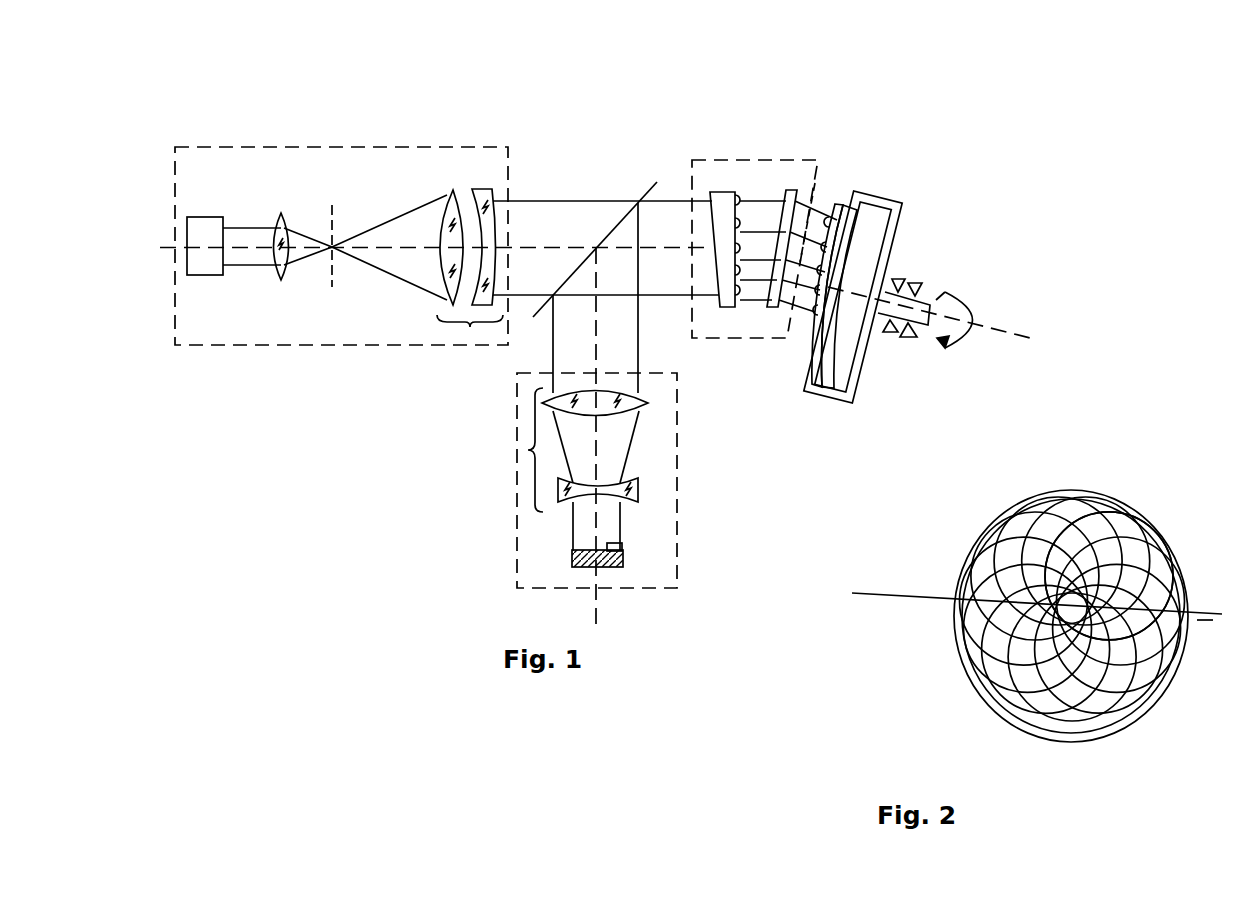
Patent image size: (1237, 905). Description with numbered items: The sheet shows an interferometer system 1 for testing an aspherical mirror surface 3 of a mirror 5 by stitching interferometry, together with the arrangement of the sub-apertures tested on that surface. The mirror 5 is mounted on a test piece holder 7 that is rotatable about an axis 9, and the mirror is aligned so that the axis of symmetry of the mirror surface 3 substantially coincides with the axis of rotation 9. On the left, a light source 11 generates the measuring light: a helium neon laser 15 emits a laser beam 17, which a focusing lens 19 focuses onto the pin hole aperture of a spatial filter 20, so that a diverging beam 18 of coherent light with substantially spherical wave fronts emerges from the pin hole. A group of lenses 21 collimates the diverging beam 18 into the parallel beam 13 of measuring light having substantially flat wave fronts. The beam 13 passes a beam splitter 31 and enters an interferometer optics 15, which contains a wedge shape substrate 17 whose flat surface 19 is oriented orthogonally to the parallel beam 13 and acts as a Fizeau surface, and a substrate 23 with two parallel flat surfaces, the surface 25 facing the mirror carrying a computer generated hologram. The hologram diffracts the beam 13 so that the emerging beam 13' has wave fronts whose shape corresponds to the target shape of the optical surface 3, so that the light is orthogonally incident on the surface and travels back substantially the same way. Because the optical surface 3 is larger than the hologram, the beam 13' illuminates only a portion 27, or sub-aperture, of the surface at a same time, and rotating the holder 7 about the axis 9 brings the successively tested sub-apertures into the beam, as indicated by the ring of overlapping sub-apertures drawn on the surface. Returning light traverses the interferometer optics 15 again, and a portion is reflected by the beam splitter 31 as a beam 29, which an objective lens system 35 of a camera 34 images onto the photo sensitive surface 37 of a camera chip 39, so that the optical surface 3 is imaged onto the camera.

In FIG. 1, the interferometer system 1 is at (508, 113).
In FIG. 1, the light source 11 is at (315, 146).
In FIG. 1, the helium neon laser / interferometer optics 15 is at (207, 216).
In FIG. 1, the laser beam / wedge shape substrate 17 is at (244, 227).
In FIG. 1, the focusing lens / flat surface 19 is at (281, 213).
In FIG. 1, the spatial filter 20 is at (337, 218).
In FIG. 1, the diverging beam 18 is at (378, 268).
In FIG. 1, the group of lenses 21 is at (470, 327).
In FIG. 1, the beam of measuring light 13 is at (439, 214).
In FIG. 1, the beam splitter 31 is at (650, 181).
In FIG. 1, the reflected beam 29 is at (640, 338).
In FIG. 1, the camera 34 is at (517, 523).
In FIG. 1, the objective lens system 35 is at (528, 449).
In FIG. 1, the photo sensitive surface 37 is at (622, 545).
In FIG. 1, the camera chip 39 is at (572, 553).
In FIG. 1, the substrate 23 is at (790, 190).
In FIG. 1, the hologram surface 25 is at (797, 190).
In FIG. 1, the shaped beam of measuring light 13' is at (788, 300).
In FIG. 1, the aspherical mirror surface 3 is at (838, 205).
In FIG. 2, the aspherical mirror surface 3 is at (1090, 733).
In FIG. 1, the mirror 5 is at (853, 208).
In FIG. 2, the mirror 5 is at (1053, 742).
In FIG. 1, the test piece holder 7 is at (880, 196).
In FIG. 1, the sub-aperture 27 is at (830, 266).
In FIG. 2, the sub-aperture 27 is at (1147, 527).
In FIG. 1, the axis of rotation 9 is at (983, 320).